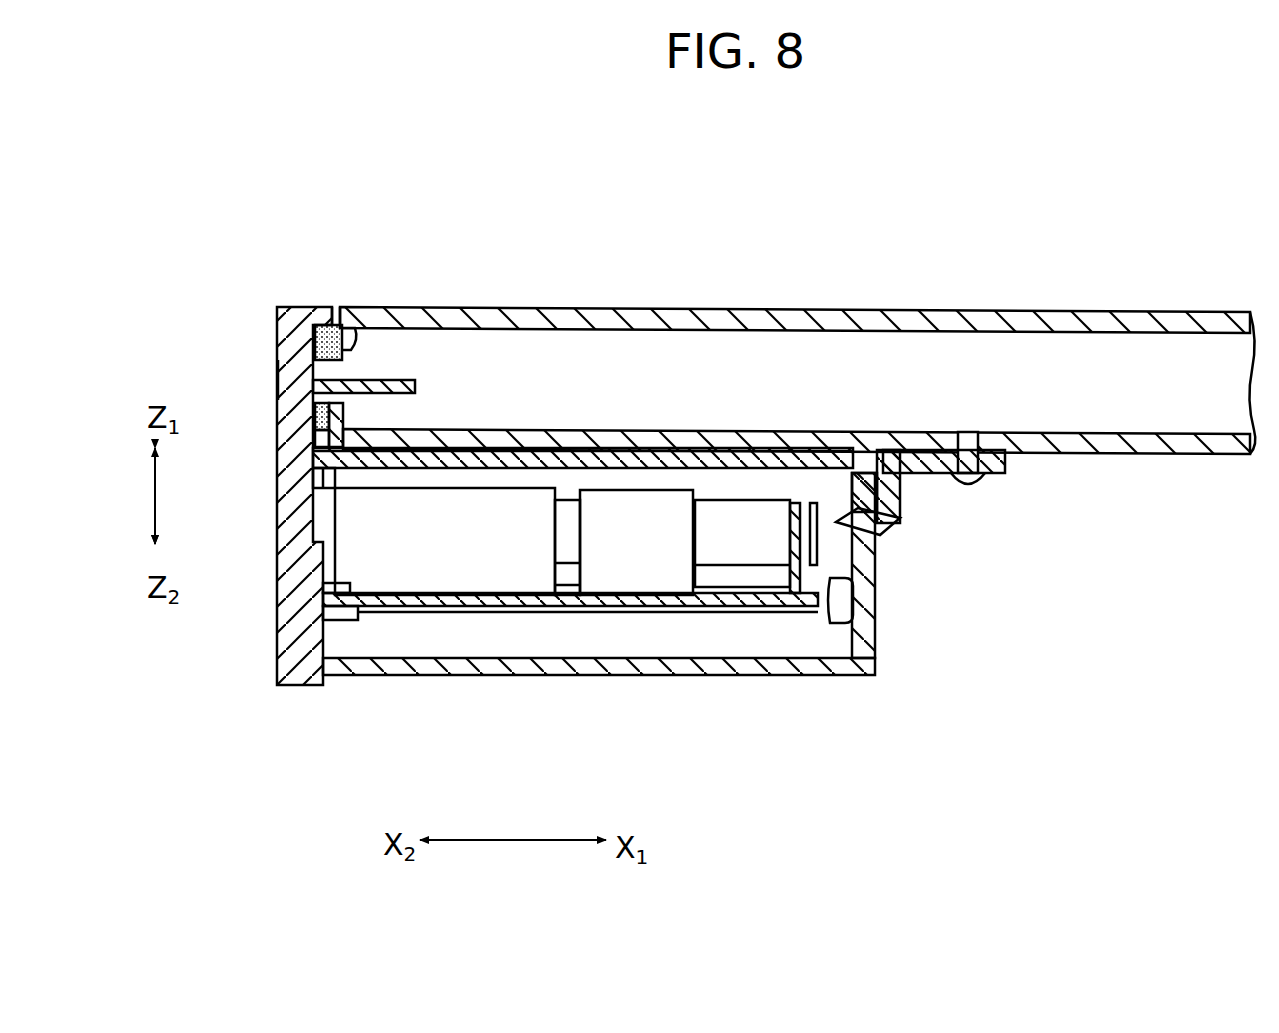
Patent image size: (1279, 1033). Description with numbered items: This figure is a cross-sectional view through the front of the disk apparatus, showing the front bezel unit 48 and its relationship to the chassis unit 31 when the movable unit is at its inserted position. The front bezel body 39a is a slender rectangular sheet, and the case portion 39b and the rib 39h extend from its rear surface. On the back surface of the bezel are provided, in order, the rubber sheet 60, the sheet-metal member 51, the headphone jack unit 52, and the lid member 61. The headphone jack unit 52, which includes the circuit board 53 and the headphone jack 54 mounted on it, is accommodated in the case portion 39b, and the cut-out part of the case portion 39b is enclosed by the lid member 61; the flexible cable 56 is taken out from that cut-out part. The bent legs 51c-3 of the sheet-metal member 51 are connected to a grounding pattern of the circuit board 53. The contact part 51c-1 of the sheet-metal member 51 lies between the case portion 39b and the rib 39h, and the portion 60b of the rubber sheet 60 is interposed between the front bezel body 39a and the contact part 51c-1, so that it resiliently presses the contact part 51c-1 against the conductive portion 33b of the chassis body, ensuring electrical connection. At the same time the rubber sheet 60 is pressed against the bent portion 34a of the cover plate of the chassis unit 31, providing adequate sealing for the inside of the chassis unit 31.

The chassis unit 31 is at (1199, 311).
The front bezel unit 48 is at (266, 317).
The bent portion 34a is at (361, 328).
The rubber sheet 60 is at (355, 348).
The front bezel body 39a is at (293, 376).
The rib 39h is at (406, 383).
The conductive portion 33b is at (345, 411).
The contact part 51c-1 is at (317, 420).
The portion of the rubber sheet 60b is at (314, 432).
The sheet-metal member 51 is at (316, 481).
The bent legs 51c-3 is at (358, 621).
The headphone jack 54 is at (443, 584).
The case portion 39b is at (538, 673).
The circuit board 53 is at (662, 612).
The lid member 61 is at (878, 607).
The headphone jack unit 52 is at (727, 486).
The flexible cable 56 is at (827, 497).